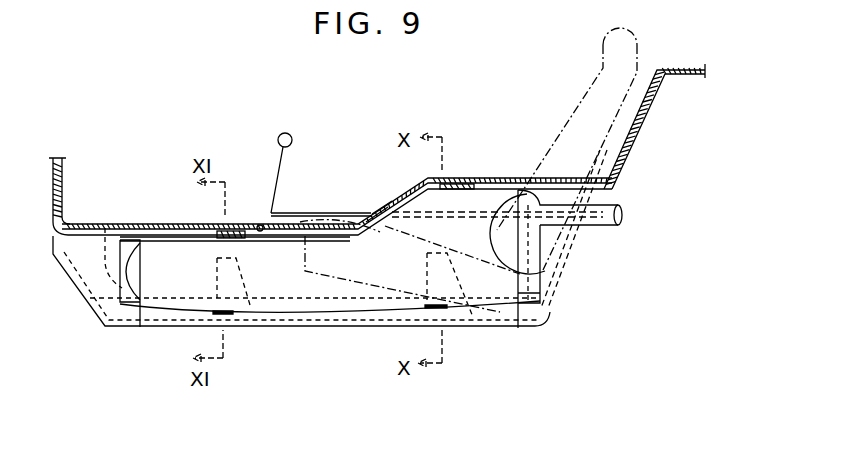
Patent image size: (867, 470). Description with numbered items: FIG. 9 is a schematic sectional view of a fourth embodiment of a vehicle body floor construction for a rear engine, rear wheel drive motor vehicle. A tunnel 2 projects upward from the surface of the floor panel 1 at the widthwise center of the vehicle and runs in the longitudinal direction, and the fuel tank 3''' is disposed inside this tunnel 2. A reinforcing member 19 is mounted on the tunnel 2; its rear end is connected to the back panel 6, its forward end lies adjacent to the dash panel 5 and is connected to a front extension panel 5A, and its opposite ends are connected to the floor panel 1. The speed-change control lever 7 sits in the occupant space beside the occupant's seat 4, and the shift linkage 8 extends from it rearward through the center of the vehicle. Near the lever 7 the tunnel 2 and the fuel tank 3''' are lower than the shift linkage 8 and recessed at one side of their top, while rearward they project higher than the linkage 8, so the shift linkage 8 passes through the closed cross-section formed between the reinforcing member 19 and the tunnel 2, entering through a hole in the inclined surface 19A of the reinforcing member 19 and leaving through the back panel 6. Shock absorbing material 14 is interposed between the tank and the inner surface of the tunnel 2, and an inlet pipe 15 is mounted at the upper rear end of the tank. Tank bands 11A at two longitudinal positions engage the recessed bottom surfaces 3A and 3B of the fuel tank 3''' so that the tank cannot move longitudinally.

The floor panel 1 is at (344, 327).
The tunnel 2 is at (260, 225).
The fuel tank 3''' is at (148, 239).
The bottom surface 3A is at (168, 307).
The bottom surface 3B is at (507, 307).
The occupant's seat 4 is at (587, 93).
The dash panel 5 is at (63, 180).
The front extension panel 5A is at (82, 228).
The back panel 6 is at (641, 118).
The speed-change control lever 7 is at (284, 133).
The shift linkage 8 is at (315, 211).
The tank band 11A is at (235, 280).
The shock absorbing material 14 is at (457, 180).
The inlet pipe 15 is at (602, 226).
The reinforcing member 19 is at (518, 176).
The inclined surface 19A is at (392, 206).